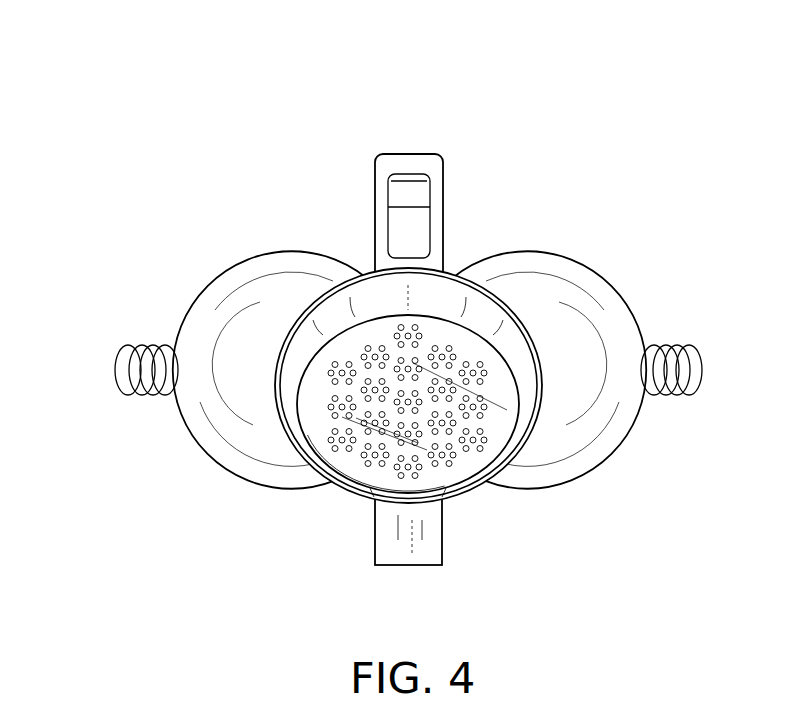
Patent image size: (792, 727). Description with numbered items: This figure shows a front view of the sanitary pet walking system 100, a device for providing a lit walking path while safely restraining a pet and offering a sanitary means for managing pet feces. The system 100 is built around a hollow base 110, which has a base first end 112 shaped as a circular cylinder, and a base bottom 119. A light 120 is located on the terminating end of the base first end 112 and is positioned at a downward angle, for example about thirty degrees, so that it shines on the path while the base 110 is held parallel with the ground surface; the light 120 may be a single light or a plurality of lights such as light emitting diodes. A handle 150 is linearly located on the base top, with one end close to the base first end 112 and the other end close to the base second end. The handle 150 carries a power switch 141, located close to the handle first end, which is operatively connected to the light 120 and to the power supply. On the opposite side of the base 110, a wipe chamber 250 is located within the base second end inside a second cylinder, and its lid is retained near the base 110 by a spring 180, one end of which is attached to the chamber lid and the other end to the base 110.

The sanitary pet walking system 100 is at (120, 128).
The hollow base 110 is at (291, 505).
The base first end 112 is at (469, 302).
The base bottom 119 is at (427, 565).
The light 120 is at (473, 442).
The power switch 141 is at (407, 227).
The handle 150 is at (376, 183).
The spring 180 is at (140, 366).
The wipe chamber 250 is at (627, 316).